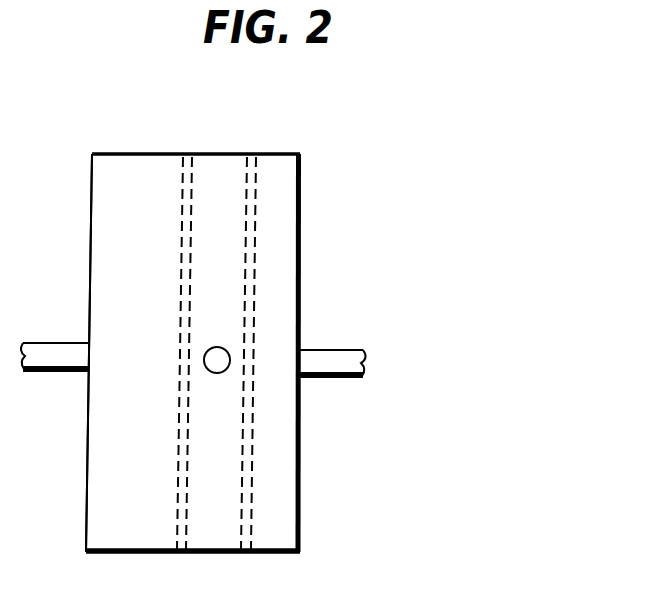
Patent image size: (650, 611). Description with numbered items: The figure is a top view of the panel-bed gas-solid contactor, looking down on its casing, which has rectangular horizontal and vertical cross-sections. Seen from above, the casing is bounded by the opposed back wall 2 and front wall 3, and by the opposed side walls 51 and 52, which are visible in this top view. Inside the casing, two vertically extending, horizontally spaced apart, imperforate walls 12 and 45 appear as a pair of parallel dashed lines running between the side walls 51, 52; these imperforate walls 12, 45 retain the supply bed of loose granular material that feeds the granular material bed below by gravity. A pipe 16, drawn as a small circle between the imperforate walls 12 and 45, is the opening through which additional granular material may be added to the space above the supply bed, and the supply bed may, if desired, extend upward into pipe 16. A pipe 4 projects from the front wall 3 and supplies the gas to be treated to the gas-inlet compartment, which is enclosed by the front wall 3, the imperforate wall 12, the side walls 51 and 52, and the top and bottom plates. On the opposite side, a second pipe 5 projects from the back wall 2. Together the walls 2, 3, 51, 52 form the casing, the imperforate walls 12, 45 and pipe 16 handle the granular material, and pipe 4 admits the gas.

The back wall 2 is at (299, 500).
The front wall 3 is at (85, 490).
The pipe 4 is at (52, 342).
The outlet pipe 5 is at (318, 349).
The imperforate wall 12 is at (182, 218).
The pipe 16 is at (205, 372).
The imperforate wall 45 is at (263, 200).
The side wall 51 is at (150, 153).
The side wall 52 is at (210, 557).